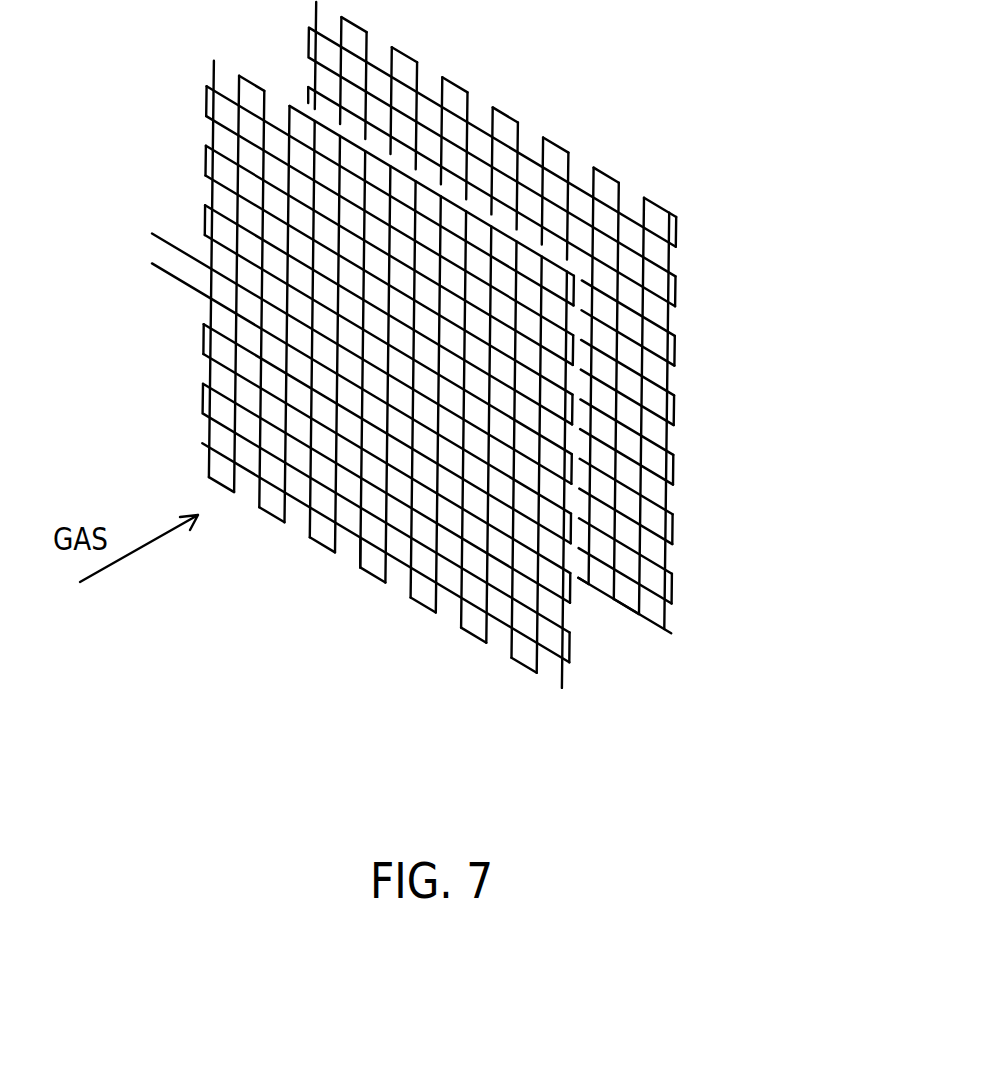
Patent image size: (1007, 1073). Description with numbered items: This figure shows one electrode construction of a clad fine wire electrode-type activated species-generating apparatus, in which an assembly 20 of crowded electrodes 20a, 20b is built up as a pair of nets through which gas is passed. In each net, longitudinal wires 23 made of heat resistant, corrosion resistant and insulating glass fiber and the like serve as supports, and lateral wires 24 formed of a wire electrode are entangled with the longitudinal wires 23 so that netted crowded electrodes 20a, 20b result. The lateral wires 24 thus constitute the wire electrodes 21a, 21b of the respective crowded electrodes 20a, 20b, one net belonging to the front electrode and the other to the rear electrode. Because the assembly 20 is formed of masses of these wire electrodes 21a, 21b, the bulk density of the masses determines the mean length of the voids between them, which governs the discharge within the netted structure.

The assembly of crowded electrodes 20 is at (440, 392).
The crowded electrode 20a is at (180, 403).
The crowded electrode 20b is at (683, 260).
The wire electrode 21a is at (327, 458).
The wire electrode 21b is at (574, 184).
The longitudinal wire 23 is at (362, 550).
The lateral wire 24 is at (455, 350).